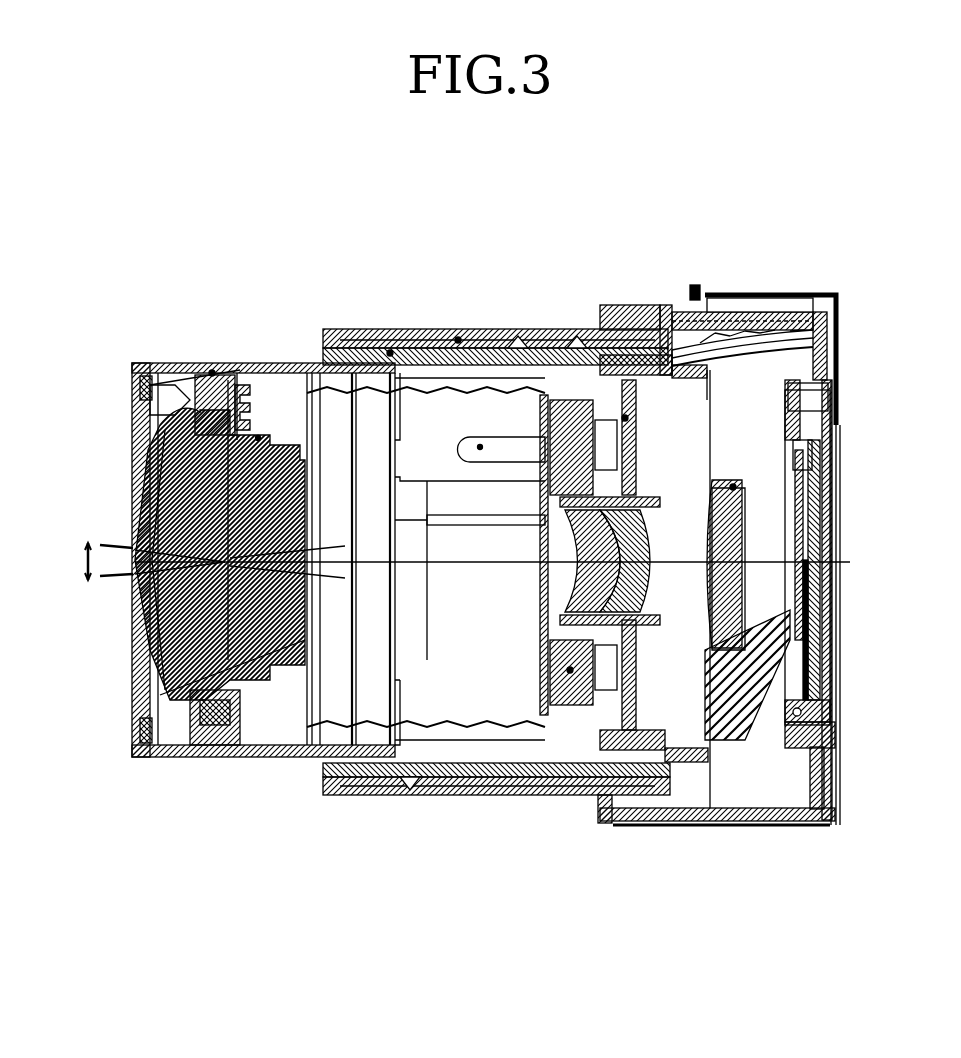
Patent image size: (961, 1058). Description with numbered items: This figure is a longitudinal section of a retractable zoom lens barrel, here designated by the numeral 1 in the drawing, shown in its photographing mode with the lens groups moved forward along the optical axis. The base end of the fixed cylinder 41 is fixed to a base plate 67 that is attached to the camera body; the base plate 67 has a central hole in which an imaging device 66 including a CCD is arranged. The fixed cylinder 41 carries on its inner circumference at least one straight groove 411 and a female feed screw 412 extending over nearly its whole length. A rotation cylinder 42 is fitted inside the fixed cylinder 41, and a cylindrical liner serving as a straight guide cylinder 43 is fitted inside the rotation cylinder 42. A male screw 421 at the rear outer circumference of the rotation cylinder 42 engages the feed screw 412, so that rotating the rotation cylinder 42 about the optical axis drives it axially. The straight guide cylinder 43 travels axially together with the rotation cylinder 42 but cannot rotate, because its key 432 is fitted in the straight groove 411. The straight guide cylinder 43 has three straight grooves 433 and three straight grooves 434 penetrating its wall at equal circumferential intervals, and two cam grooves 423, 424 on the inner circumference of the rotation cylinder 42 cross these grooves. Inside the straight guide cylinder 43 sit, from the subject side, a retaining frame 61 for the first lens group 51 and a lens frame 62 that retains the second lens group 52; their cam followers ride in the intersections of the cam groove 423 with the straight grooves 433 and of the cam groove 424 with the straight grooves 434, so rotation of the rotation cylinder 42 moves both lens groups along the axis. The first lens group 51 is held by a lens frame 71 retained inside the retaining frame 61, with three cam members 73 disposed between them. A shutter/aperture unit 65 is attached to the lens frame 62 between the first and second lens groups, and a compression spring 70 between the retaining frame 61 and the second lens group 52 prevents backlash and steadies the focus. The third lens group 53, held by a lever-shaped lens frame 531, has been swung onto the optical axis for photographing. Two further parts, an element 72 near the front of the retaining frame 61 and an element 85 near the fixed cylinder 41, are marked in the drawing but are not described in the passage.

The optical axis 1 is at (467, 561).
The fixed cylinder 41 is at (783, 827).
The rotation cylinder 42 is at (458, 340).
The straight guide cylinder 43 is at (390, 352).
The first lens group 51 is at (258, 438).
The second lens group 52 is at (640, 600).
The third lens group 53 is at (837, 670).
The retaining frame 61 is at (212, 372).
The lens frame 62 is at (625, 418).
The shutter/aperture unit 65 is at (570, 670).
The imaging device 66 is at (833, 627).
The base plate 67 is at (790, 407).
The compression spring 70 is at (467, 795).
The lens frame 71 is at (135, 362).
The front window 72 is at (170, 362).
The cam member 73 is at (232, 363).
The screw 85 is at (693, 285).
The straight groove 411 is at (705, 318).
The female feed screw 412 is at (760, 298).
The male screw 421 is at (640, 304).
The cam groove 423 is at (520, 340).
The cam groove 424 is at (577, 342).
The key 432 is at (680, 312).
The straight groove 433 is at (462, 508).
The straight groove 434 is at (480, 447).
The lens frame 531 is at (733, 487).